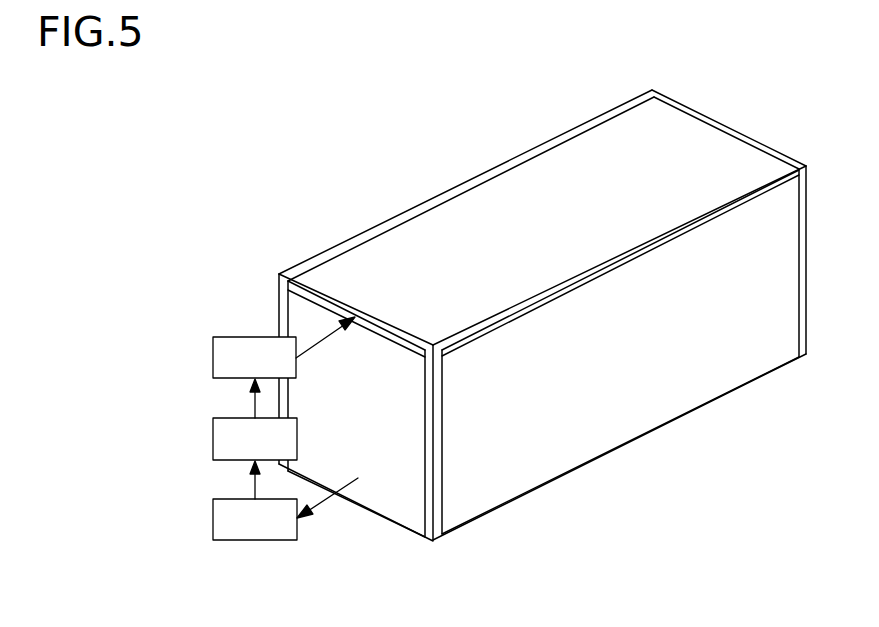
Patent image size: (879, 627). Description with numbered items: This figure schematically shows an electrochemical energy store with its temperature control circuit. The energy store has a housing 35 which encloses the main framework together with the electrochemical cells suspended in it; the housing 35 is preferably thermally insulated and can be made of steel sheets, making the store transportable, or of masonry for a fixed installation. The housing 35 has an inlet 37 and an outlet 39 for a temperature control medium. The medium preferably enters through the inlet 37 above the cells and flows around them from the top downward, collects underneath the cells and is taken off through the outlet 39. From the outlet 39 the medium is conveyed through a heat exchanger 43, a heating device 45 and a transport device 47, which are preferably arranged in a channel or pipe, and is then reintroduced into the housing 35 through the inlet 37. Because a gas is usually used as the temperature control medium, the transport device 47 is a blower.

The housing 35 is at (693, 148).
The inlet 37 is at (317, 343).
The outlet 39 is at (333, 497).
The heat exchanger 43 is at (232, 520).
The heating device 45 is at (227, 443).
The transport device 47 is at (233, 358).